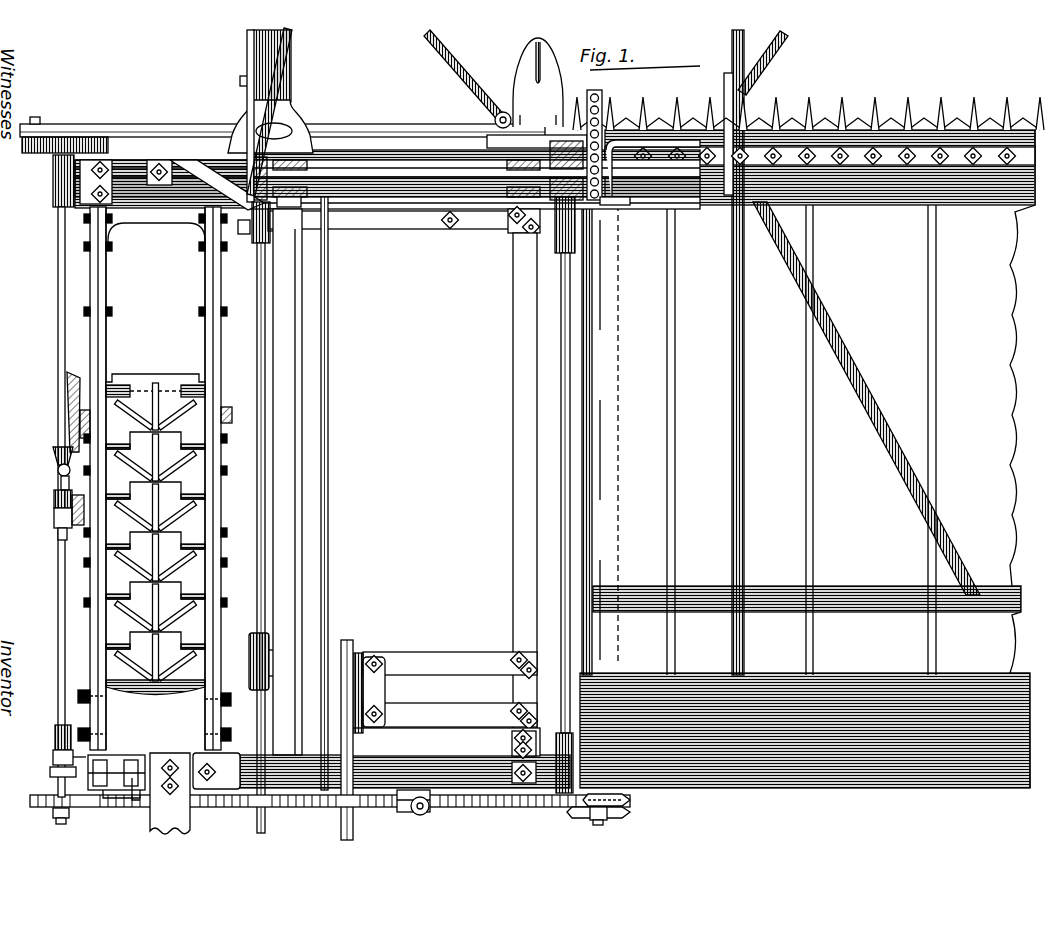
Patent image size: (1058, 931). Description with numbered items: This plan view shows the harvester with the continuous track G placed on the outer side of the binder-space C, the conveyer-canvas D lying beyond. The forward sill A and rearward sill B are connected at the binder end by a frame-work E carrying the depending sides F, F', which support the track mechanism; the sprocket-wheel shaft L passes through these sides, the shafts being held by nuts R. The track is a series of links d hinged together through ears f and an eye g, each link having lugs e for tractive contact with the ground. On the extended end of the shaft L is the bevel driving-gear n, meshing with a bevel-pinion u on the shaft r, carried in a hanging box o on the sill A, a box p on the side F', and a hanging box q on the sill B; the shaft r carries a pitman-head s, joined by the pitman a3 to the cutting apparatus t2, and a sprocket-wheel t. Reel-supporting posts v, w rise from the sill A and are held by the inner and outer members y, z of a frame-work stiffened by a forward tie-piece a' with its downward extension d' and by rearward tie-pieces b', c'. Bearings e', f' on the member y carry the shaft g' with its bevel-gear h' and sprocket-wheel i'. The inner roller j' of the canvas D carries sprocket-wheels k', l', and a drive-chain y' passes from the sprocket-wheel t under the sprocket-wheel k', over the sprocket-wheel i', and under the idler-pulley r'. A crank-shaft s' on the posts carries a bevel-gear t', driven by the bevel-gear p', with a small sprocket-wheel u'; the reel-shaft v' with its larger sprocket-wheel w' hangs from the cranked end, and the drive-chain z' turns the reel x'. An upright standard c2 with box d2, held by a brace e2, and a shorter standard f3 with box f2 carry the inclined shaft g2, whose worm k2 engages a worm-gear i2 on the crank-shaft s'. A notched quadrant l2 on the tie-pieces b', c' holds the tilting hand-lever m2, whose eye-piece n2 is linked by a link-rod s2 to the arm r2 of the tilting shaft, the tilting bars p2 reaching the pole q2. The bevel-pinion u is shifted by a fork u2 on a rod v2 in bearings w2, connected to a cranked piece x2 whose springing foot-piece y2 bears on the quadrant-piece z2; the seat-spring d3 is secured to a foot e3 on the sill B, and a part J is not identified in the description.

The forward sill A is at (145, 153).
The rearward sill B is at (405, 758).
The binder-space C is at (405, 482).
The conveyer-canvas D is at (807, 459).
The frame-work E is at (215, 278).
The depending side F is at (198, 478).
The depending side F' is at (118, 478).
The continuous track G is at (152, 374).
The bracket J is at (158, 715).
The shaft of the sprocket-wheel L is at (232, 414).
The nuts R is at (227, 470).
The pitman a3 is at (165, 130).
The forward tie-piece a' is at (504, 221).
The tie-piece b' is at (450, 665).
The tie-piece c' is at (450, 716).
The upright standard c2 is at (278, 233).
The links d is at (194, 526).
The outward and downward extension d' is at (217, 185).
The box d2 is at (256, 243).
The seat-spring d3 is at (170, 793).
The lugs e is at (156, 532).
The bearing e' is at (557, 237).
The brace e2 is at (390, 220).
The foot e3 is at (216, 771).
The ears f is at (115, 541).
The bearing f' is at (555, 751).
The box f2 is at (249, 652).
The shorter standard f3 is at (274, 650).
The eye g is at (155, 540).
The shaft g' is at (555, 493).
The inclined shaft g2 is at (265, 426).
The bevel-gear h' is at (614, 235).
The sprocket-wheel i' is at (330, 812).
The worm-gear i2 is at (250, 212).
The inner roller of the conveyer-canvas j' is at (632, 435).
The sprocket-wheel k' is at (615, 799).
The worm k2 is at (244, 148).
The sprocket-wheel l' is at (615, 813).
The notched quadrant l2 is at (374, 657).
The tilting hand-lever m2 is at (335, 740).
The bevel driving-gear n is at (78, 405).
The eye-piece n2 is at (356, 655).
The hanging box o is at (52, 183).
The box p is at (53, 492).
The bevel-gear p' is at (561, 154).
The tilting bars p2 is at (246, 42).
The hanging box q is at (53, 760).
The pole q2 is at (292, 62).
The shaft r is at (69, 502).
The idler-pulley r' is at (431, 813).
The arm r2 is at (330, 205).
The pitman-head s is at (72, 145).
The crank-shaft s' is at (387, 139).
The link-rod s2 is at (330, 492).
The sprocket-wheel t is at (48, 821).
The bevel-gear t' is at (626, 211).
The cutting apparatus t2 is at (808, 106).
The bevel-pinion u is at (55, 451).
The small sprocket-wheel u' is at (633, 225).
The fork u2 is at (58, 470).
The inner reel-supporting post v is at (509, 212).
The reel-shaft v' is at (611, 139).
The rod v2 is at (58, 540).
The outer reel-supporting post w is at (296, 211).
The larger sprocket-wheel w' is at (533, 82).
The bearings w2 is at (54, 516).
The reel x' is at (852, 352).
The cranked piece x2 is at (50, 774).
The inner member of the frame-work y is at (521, 369).
The sprocket drive-chain y' is at (403, 811).
The springing foot-piece y2 is at (126, 796).
The outer member of the frame-work z is at (304, 384).
The sprocket drive-chain z' is at (653, 147).
The quadrant-piece z2 is at (126, 804).